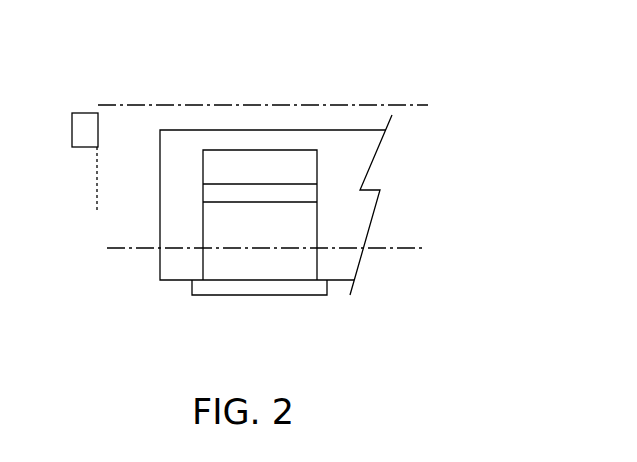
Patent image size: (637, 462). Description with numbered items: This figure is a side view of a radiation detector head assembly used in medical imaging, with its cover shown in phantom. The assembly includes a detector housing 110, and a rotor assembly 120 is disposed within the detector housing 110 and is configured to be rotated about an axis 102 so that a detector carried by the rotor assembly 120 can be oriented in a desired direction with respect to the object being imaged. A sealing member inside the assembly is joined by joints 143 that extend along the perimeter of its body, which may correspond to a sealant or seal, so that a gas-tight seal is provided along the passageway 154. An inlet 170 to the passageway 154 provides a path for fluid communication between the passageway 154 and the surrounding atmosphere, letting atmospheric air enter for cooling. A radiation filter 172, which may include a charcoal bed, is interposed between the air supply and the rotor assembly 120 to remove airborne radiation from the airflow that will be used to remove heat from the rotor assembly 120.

The axis 102 is at (120, 245).
The detector housing 110 is at (253, 102).
The rotor assembly 120 is at (273, 121).
The joints 143 is at (190, 287).
The passageway 154 is at (179, 125).
The inlet 170 is at (104, 131).
The radiation filter 172 is at (86, 112).